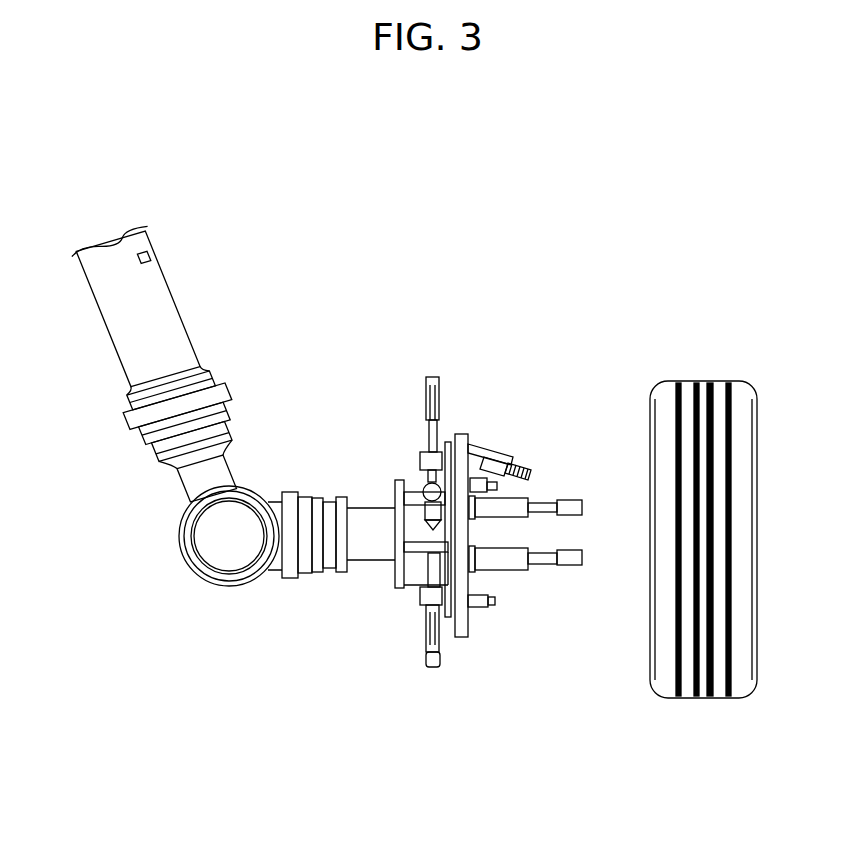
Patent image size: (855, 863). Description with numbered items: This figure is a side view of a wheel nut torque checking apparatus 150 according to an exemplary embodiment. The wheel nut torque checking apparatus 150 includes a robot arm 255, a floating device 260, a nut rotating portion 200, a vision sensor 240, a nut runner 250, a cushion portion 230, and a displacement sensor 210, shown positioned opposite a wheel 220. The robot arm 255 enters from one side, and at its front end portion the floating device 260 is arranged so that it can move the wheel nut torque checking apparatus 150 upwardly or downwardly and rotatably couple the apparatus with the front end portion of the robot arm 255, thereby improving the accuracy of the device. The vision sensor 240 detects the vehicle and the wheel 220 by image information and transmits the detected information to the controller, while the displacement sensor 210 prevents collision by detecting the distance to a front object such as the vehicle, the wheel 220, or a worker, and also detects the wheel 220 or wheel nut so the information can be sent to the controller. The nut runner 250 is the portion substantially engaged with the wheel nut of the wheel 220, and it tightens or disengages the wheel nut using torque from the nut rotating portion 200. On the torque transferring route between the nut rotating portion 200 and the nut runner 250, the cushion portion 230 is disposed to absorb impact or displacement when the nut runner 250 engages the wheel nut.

The wheel nut torque checking apparatus 150 is at (357, 610).
The nut rotating portion 200 is at (430, 404).
The displacement sensor 210 is at (482, 608).
The wheel 220 is at (710, 707).
The cushion portion 230 is at (477, 573).
The vision sensor 240 is at (520, 452).
The nut runner 250 is at (570, 506).
The robot arm 255 is at (170, 330).
The floating device 260 is at (372, 520).